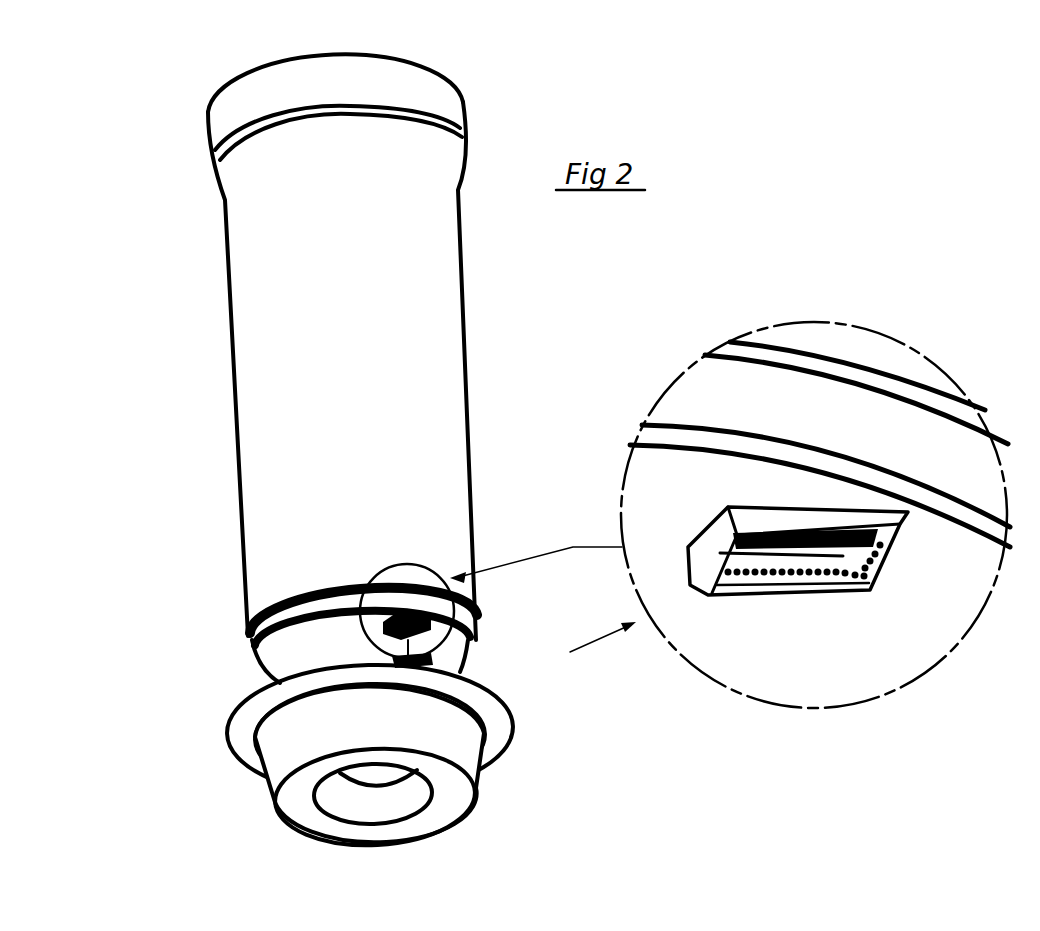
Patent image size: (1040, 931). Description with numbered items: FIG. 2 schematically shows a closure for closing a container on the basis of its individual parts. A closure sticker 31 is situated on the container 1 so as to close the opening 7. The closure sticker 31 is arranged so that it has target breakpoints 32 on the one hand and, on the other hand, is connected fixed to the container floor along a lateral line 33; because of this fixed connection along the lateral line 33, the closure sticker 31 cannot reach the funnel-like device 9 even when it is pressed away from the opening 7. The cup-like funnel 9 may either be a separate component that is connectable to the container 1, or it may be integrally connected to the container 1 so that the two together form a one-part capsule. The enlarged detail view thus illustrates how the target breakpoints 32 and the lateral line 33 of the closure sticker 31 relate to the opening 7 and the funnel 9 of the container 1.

The container 1 is at (460, 247).
The opening 7 is at (375, 585).
The funnel-like device 9 is at (462, 753).
The closure sticker 31 is at (420, 632).
The target breakpoints 32 is at (710, 548).
The lateral line 33 is at (770, 587).